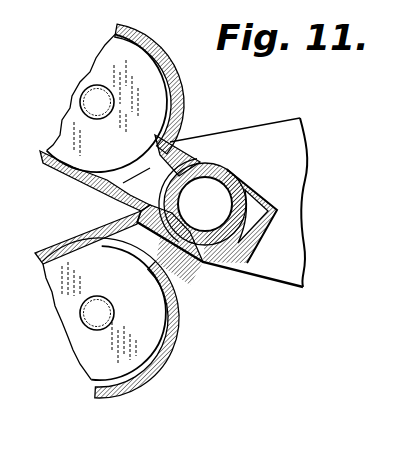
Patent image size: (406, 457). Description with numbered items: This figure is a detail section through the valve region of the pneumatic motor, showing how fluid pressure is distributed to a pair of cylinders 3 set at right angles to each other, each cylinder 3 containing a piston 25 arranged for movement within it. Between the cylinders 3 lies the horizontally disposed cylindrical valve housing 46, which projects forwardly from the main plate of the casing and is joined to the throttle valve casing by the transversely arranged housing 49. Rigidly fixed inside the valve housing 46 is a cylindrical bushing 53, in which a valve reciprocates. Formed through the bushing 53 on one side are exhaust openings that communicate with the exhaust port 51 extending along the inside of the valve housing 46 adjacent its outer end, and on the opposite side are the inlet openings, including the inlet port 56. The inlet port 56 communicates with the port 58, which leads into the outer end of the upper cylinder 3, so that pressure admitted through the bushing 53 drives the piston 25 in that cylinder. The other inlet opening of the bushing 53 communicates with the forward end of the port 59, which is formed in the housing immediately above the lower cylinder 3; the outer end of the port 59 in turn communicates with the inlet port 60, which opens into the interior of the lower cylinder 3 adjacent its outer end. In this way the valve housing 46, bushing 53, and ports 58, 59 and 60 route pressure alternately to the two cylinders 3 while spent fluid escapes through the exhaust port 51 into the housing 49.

The cylinder 3 is at (170, 62).
The piston 25 is at (67, 125).
The port 58 is at (112, 196).
The port 59 is at (185, 270).
The inlet port 60 is at (148, 254).
The inlet port 56 is at (185, 172).
The cylindrical bushing 53 is at (283, 213).
The exhaust port 51 is at (253, 227).
The cylindrical valve housing 46 is at (227, 167).
The transversely arranged housing 49 is at (295, 143).